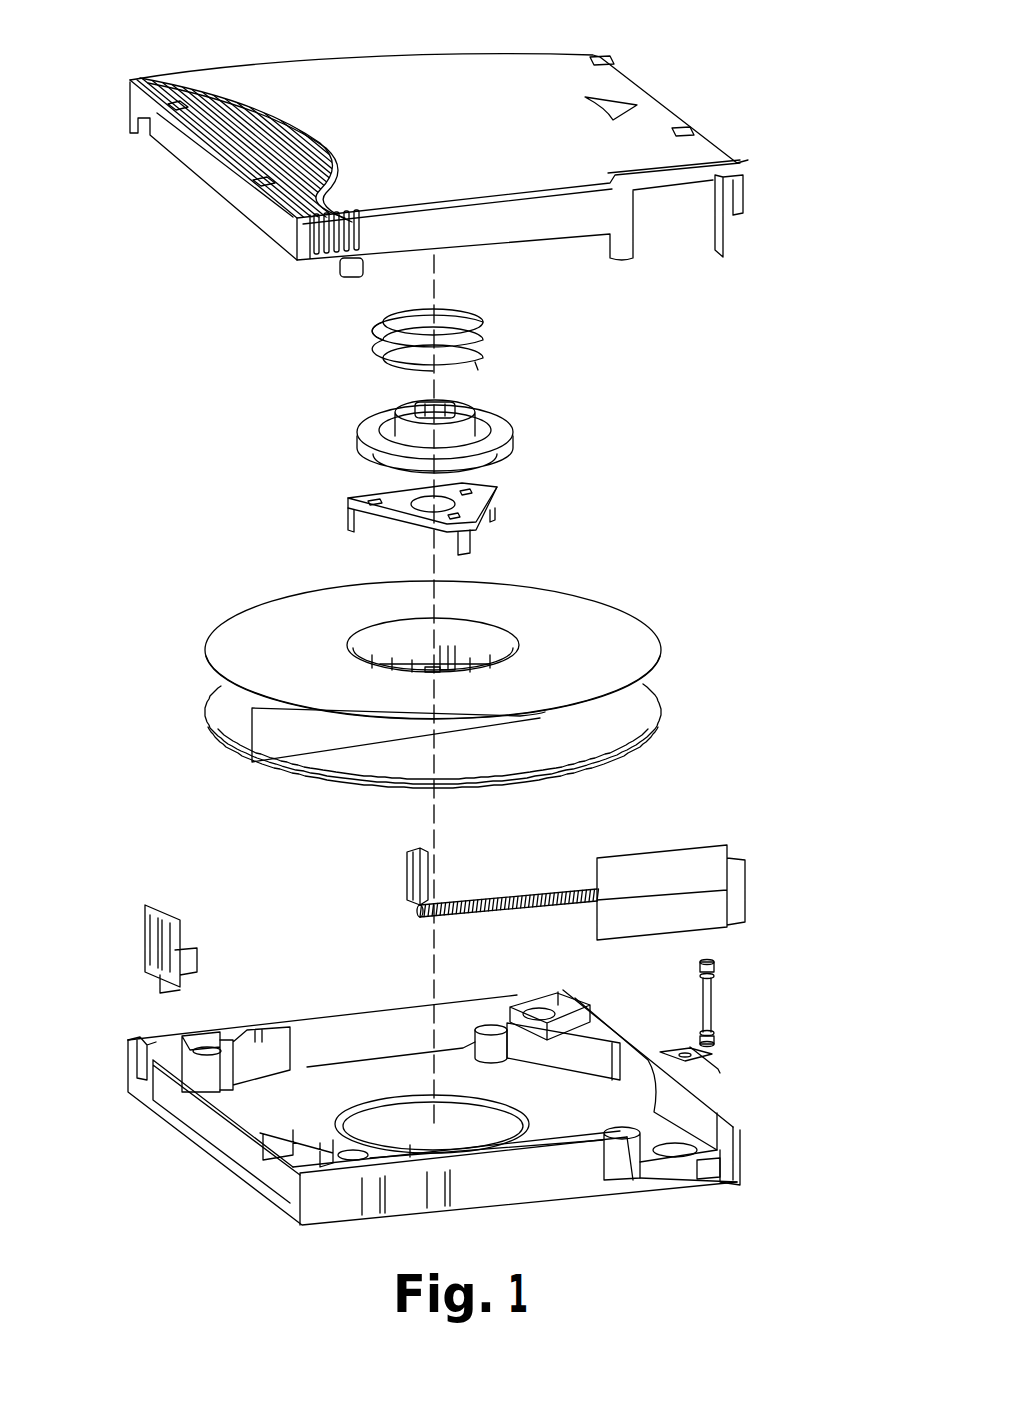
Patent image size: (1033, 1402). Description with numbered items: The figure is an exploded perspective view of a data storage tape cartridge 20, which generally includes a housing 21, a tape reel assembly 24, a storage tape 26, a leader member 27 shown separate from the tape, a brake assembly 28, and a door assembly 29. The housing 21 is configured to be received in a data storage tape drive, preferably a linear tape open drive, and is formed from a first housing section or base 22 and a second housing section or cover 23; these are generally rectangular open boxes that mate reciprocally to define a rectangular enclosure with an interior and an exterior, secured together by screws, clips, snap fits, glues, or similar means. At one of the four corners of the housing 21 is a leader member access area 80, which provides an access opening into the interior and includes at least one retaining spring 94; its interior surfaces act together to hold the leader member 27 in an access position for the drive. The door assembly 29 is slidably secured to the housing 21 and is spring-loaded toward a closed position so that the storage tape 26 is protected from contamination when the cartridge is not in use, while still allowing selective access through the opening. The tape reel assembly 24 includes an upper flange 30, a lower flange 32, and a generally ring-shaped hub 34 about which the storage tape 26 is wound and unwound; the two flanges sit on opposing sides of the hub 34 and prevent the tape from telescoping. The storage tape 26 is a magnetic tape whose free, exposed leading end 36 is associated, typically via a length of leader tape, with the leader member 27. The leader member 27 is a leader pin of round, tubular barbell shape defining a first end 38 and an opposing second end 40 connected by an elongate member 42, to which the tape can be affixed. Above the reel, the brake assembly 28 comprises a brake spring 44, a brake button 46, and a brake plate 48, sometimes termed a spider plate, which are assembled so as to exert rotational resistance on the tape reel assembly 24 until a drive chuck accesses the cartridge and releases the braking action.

The data storage tape cartridge 20 is at (712, 28).
The housing 21 is at (106, 104).
The first housing section (base) 22 is at (323, 1216).
The second housing section (cover) 23 is at (280, 98).
The tape reel assembly 24 is at (588, 578).
The storage tape 26 is at (318, 774).
The leader member 27 is at (728, 993).
The brake assembly 28 is at (532, 405).
The door assembly 29 is at (752, 886).
The upper flange 30 is at (232, 640).
The lower flange 32 is at (234, 730).
The hub 34 is at (452, 650).
The leading end 36 is at (246, 740).
The first end 38 is at (716, 1048).
The second end 40 is at (716, 962).
The elongate member 42 is at (714, 1017).
The brake spring 44 is at (385, 346).
The brake button 46 is at (365, 448).
The brake plate 48 is at (348, 520).
The leader member access area 80 is at (685, 168).
The retaining spring 94 is at (698, 1072).